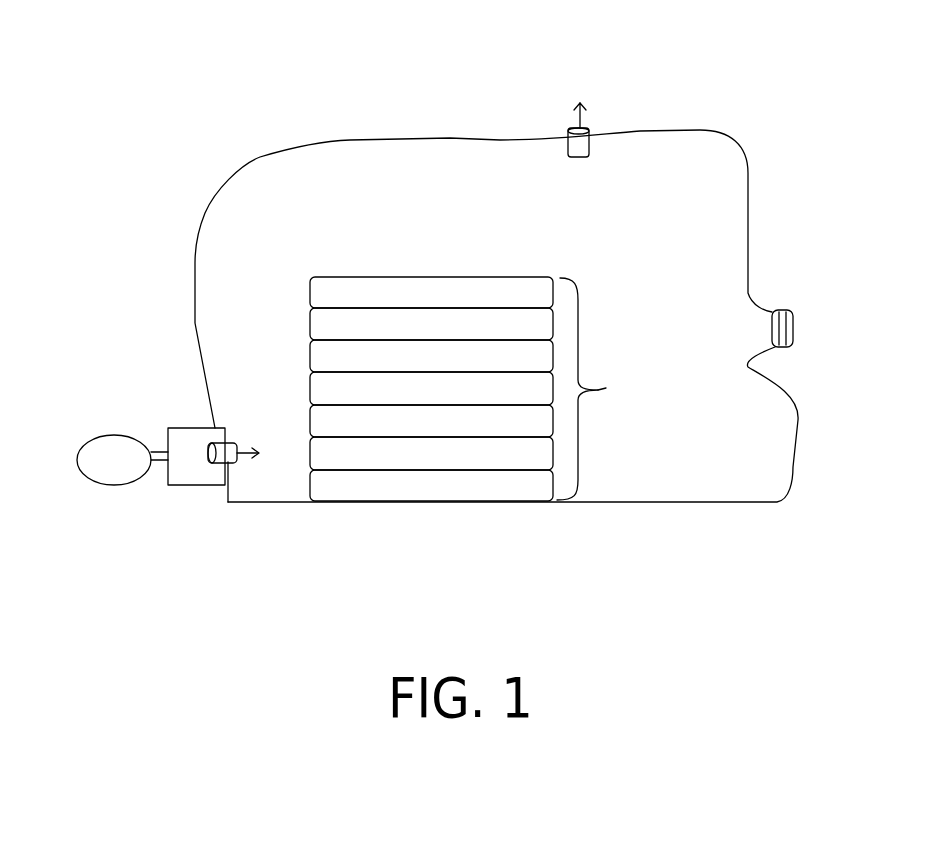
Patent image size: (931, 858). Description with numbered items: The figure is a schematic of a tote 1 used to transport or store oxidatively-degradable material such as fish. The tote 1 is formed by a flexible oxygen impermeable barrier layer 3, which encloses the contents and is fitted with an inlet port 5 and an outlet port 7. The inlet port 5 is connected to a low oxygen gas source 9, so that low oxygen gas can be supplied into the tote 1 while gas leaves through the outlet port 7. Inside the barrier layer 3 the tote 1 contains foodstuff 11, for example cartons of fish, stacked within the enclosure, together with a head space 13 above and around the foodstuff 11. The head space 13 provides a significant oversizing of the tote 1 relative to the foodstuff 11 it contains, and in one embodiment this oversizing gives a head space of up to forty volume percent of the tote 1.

The tote 1 is at (436, 276).
The flexible oxygen impermeable barrier layer 3 is at (730, 138).
The inlet port 5 is at (232, 427).
The outlet port 7 is at (595, 133).
The low oxygen gas source 9 is at (77, 458).
The foodstuff 11 is at (417, 272).
The head space 13 is at (627, 223).